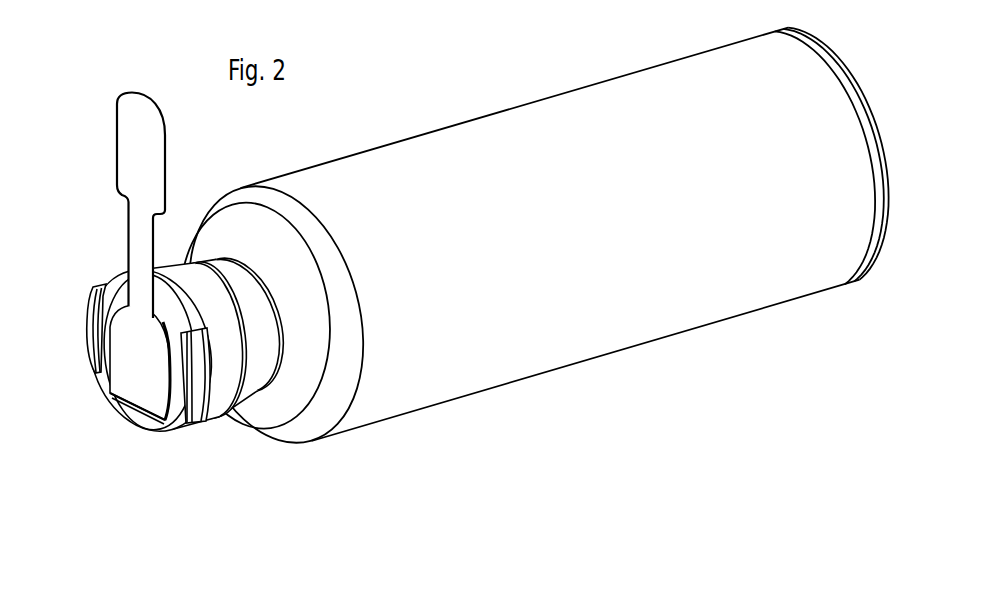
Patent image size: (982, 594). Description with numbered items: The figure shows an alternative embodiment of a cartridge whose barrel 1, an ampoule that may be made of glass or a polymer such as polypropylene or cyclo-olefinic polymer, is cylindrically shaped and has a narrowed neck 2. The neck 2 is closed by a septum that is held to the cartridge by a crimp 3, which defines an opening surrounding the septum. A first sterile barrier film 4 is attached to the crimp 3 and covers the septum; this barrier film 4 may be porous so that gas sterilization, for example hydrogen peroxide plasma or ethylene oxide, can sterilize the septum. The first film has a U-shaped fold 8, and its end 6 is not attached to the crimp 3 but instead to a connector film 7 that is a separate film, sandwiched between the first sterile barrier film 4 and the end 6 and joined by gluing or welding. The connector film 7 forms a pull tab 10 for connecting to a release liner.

The barrel 1 is at (625, 313).
The neck 2 is at (258, 345).
The crimp 3 is at (220, 350).
The first sterile barrier film section 4 is at (116, 305).
The end of the first film 6 is at (145, 347).
The connector film 7 is at (142, 152).
The U-shaped fold 8 is at (127, 413).
The pull tab 10 is at (133, 110).